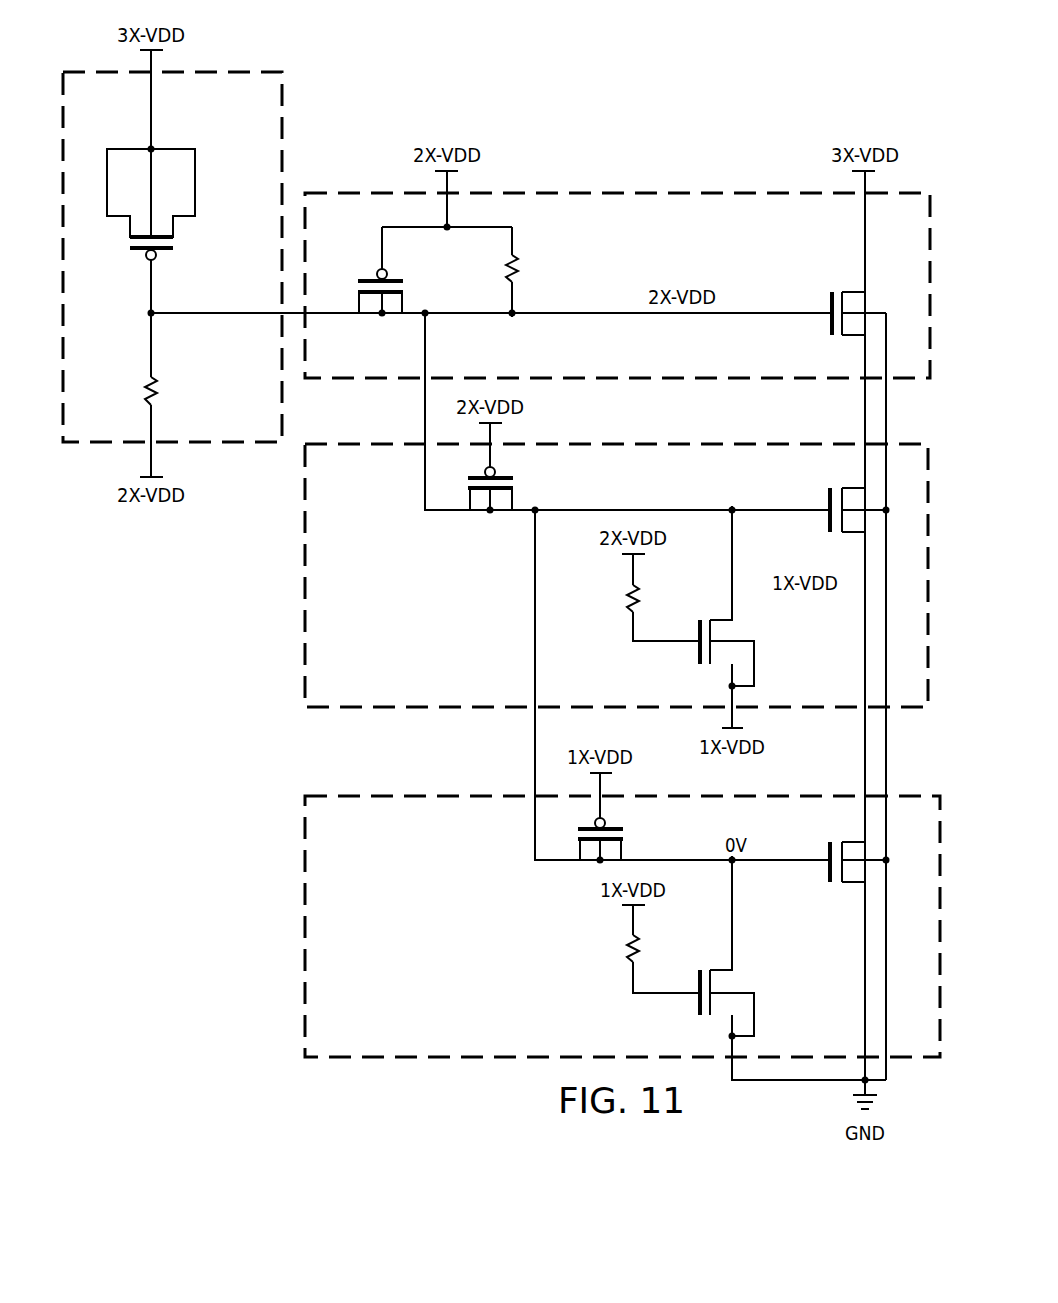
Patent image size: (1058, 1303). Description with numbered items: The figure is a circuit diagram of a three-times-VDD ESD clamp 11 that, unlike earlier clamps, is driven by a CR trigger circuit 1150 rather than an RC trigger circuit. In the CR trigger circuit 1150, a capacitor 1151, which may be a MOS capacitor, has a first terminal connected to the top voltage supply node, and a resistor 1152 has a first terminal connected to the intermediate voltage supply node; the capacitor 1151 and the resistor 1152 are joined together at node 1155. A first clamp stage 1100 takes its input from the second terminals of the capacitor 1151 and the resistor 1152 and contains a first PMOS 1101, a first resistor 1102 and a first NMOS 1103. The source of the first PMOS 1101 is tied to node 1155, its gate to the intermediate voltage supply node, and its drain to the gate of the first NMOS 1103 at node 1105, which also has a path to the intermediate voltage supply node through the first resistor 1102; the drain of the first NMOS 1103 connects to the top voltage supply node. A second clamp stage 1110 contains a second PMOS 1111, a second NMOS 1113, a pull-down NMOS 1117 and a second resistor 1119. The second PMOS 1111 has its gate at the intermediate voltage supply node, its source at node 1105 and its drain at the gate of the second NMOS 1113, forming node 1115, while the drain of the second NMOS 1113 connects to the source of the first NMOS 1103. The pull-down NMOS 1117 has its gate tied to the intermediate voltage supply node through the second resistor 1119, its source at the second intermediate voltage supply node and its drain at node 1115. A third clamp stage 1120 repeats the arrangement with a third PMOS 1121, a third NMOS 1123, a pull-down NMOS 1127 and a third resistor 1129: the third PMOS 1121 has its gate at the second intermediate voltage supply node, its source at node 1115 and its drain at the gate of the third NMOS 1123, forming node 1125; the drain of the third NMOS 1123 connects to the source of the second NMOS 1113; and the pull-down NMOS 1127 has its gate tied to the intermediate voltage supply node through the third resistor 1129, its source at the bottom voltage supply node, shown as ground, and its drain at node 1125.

The 3X-VDD ESD clamp 11 is at (822, 83).
The first clamp stage 1100 is at (755, 192).
The first PMOS 1101 is at (373, 277).
The first resistor 1102 is at (522, 265).
The first NMOS 1103 is at (820, 300).
The node 1105 is at (512, 320).
The second clamp stage 1110 is at (302, 658).
The second PMOS 1111 is at (507, 465).
The second NMOS 1113 is at (828, 500).
The node 1115 is at (742, 518).
The pull-down NMOS 1117 is at (697, 628).
The second resistor 1119 is at (627, 597).
The third clamp stage 1120 is at (302, 1008).
The third PMOS 1121 is at (612, 818).
The third NMOS 1123 is at (828, 870).
The node 1125 is at (737, 865).
The pull-down NMOS 1127 is at (697, 978).
The third resistor 1129 is at (627, 947).
The CR trigger circuit 1150 is at (222, 72).
The capacitor 1151 is at (138, 252).
The resistor 1152 is at (155, 397).
The node 1155 is at (158, 318).